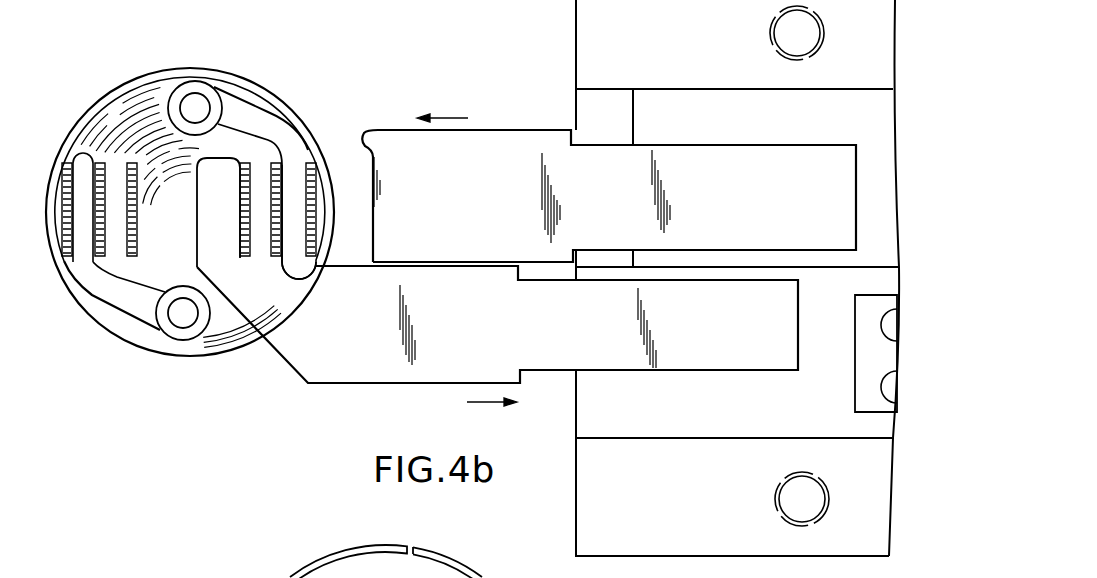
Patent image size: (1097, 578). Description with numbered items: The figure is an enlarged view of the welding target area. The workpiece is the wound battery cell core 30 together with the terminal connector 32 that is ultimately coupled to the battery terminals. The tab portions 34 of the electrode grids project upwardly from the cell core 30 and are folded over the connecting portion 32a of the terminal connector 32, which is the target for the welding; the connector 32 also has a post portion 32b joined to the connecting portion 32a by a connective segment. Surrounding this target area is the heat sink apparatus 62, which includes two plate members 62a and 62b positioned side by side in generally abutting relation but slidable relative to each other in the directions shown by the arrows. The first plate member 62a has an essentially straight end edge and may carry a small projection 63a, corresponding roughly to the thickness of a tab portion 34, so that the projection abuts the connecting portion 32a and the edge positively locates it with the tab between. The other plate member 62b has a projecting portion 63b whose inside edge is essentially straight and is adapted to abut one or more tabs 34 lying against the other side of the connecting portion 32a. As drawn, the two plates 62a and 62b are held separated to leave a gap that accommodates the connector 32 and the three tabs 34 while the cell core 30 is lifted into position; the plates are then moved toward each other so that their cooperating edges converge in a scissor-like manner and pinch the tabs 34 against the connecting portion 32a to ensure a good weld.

The wound battery cell core 30 is at (127, 88).
The terminal connector 32 is at (193, 208).
The connecting portion 32a is at (80, 159).
The post portion 32b is at (207, 87).
The tab portions 34 is at (68, 255).
The heat sink apparatus 62 is at (546, 107).
The first plate member 62a is at (507, 133).
The second plate member 62b is at (355, 384).
The projection 63a is at (363, 137).
The projecting portion 63b is at (217, 183).